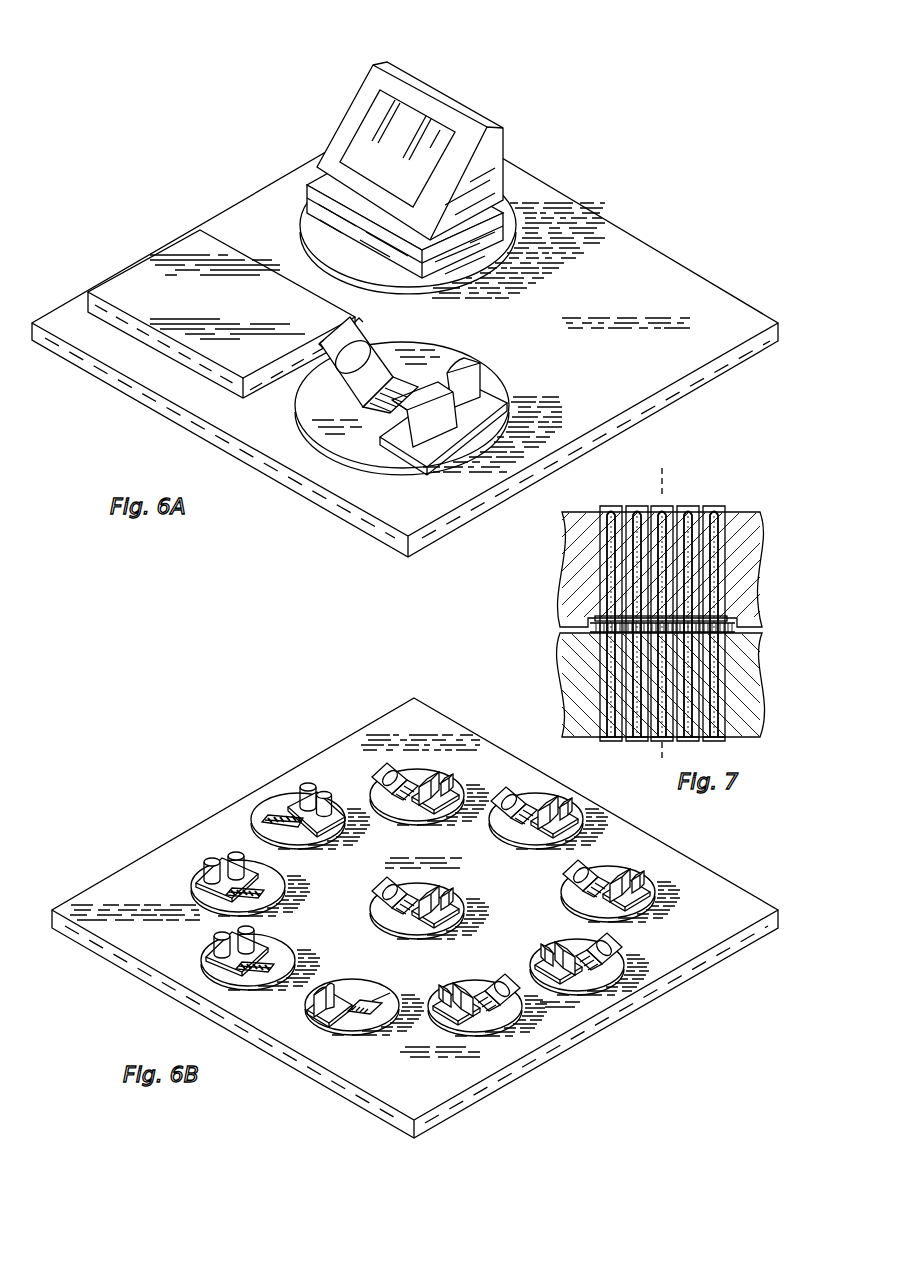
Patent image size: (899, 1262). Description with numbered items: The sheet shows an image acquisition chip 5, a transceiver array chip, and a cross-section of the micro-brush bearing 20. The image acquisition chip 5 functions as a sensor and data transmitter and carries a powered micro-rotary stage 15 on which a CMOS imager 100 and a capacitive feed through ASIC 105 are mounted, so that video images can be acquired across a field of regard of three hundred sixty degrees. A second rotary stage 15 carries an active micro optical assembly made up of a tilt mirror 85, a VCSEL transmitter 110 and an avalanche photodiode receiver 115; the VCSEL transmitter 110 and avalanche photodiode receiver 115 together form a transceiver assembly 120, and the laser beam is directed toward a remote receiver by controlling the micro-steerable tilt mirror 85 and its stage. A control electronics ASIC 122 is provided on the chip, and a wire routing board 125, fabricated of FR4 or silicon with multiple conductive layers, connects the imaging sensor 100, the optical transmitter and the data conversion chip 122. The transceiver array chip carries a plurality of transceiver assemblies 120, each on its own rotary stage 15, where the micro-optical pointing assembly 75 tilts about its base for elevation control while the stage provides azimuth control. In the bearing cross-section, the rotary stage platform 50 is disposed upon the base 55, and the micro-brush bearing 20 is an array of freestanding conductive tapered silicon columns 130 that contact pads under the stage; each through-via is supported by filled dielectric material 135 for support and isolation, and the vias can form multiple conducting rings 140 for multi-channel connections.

In FIG. 6A, the image acquisition chip 5 is at (646, 155).
In FIG. 6A, the micro-rotary stage 15 is at (517, 238).
In FIG. 6B, the micro-rotary stage 15 is at (266, 808).
In FIG. 7, the micro-brush bearing 20 is at (598, 628).
In FIG. 7, the rotary stage platform 50 is at (573, 554).
In FIG. 7, the base 55 is at (583, 696).
In FIG. 6B, the micro-optical pointing assembly 75 is at (360, 1017).
In FIG. 6A, the tilt mirror 85 is at (295, 407).
In FIG. 6A, the CMOS imager 100 is at (330, 137).
In FIG. 6A, the capacitive feed through ASIC 105 is at (497, 223).
In FIG. 6A, the VCSEL transmitter 110 is at (430, 425).
In FIG. 6A, the avalanche photodiode receiver 115 is at (481, 378).
In FIG. 6A, the transceiver assembly 120 is at (508, 404).
In FIG. 6B, the transceiver assembly 120 is at (326, 790).
In FIG. 6A, the control electronics ASIC 122 is at (137, 268).
In FIG. 6A, the wire routing board 125 is at (680, 355).
In FIG. 6B, the wire routing board 125 is at (707, 893).
In FIG. 7, the silicon columns 130 is at (599, 617).
In FIG. 7, the filled dielectric material 135 is at (713, 516).
In FIG. 7, the conducting rings 140 is at (641, 742).